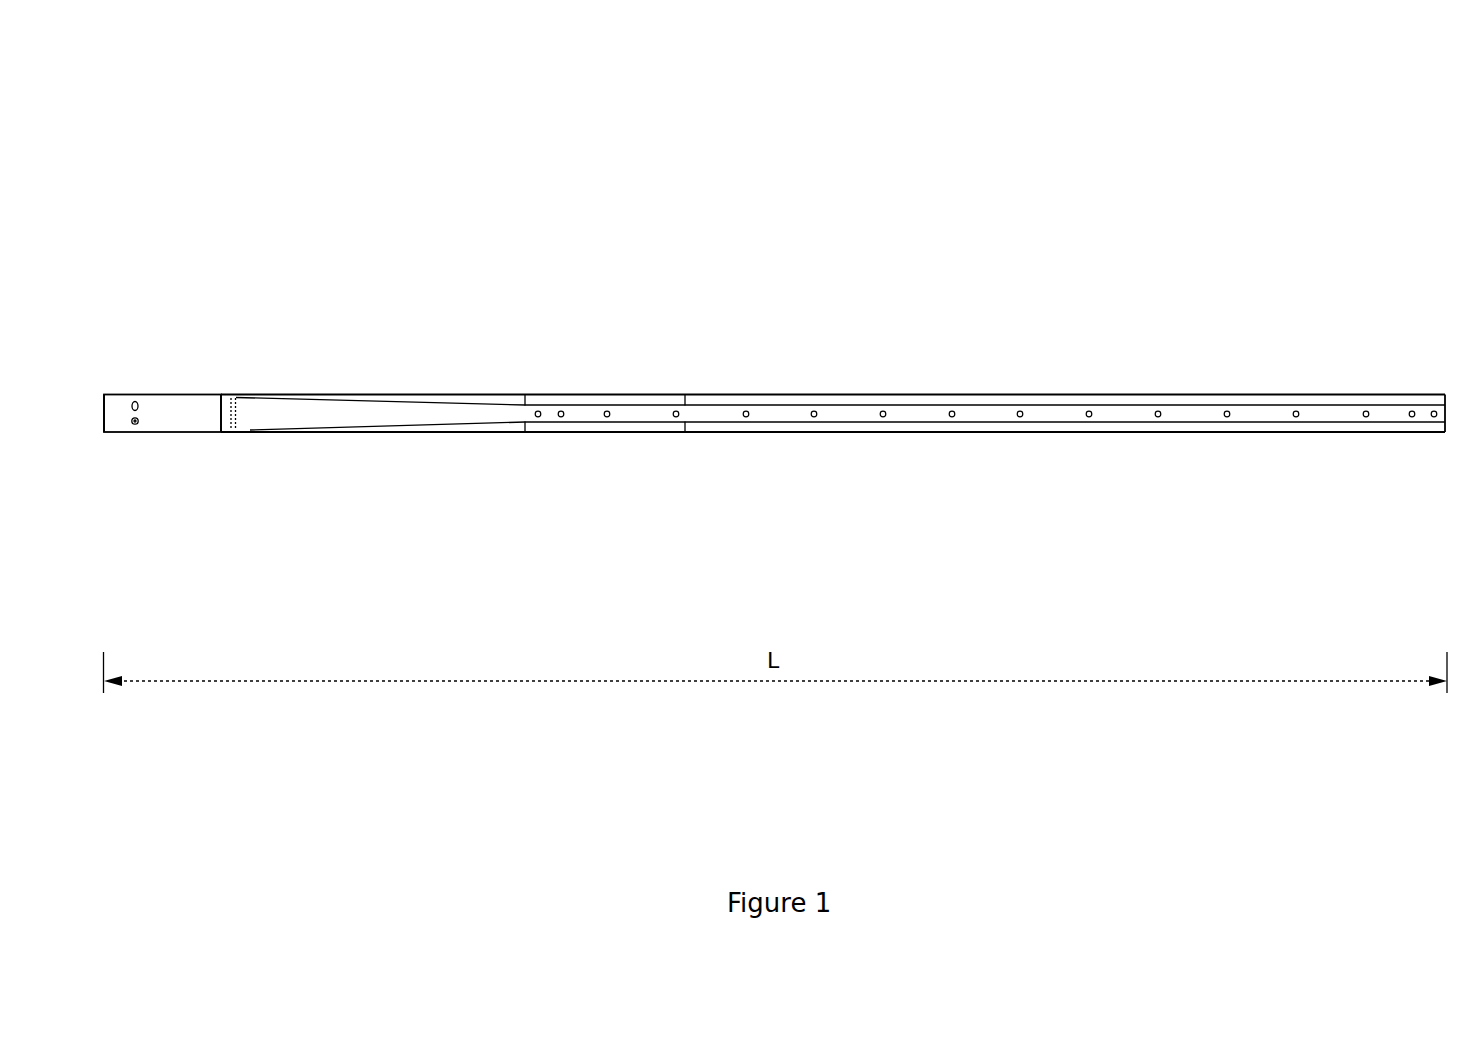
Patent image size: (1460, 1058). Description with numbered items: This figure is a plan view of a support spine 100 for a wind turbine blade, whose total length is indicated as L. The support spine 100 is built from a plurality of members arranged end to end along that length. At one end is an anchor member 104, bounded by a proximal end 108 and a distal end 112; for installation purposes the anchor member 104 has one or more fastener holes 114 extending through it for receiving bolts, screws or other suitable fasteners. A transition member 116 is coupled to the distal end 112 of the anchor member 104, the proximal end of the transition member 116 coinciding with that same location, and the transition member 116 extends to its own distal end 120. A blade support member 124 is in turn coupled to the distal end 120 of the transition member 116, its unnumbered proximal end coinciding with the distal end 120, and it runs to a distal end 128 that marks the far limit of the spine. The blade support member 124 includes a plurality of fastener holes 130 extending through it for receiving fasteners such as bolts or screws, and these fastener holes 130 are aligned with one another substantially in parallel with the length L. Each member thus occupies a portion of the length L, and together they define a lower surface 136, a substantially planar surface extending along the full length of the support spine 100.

The support spine 100 is at (266, 74).
The anchor member 104 is at (175, 362).
The proximal end 108 is at (104, 436).
The distal end 112 is at (244, 436).
The fastener holes 114 is at (138, 436).
The transition member 116 is at (395, 362).
The distal end 120 is at (524, 434).
The blade support member 124 is at (1053, 362).
The distal end 128 is at (1443, 434).
The fastener holes 130 is at (884, 417).
The lower surface 136 is at (1048, 406).